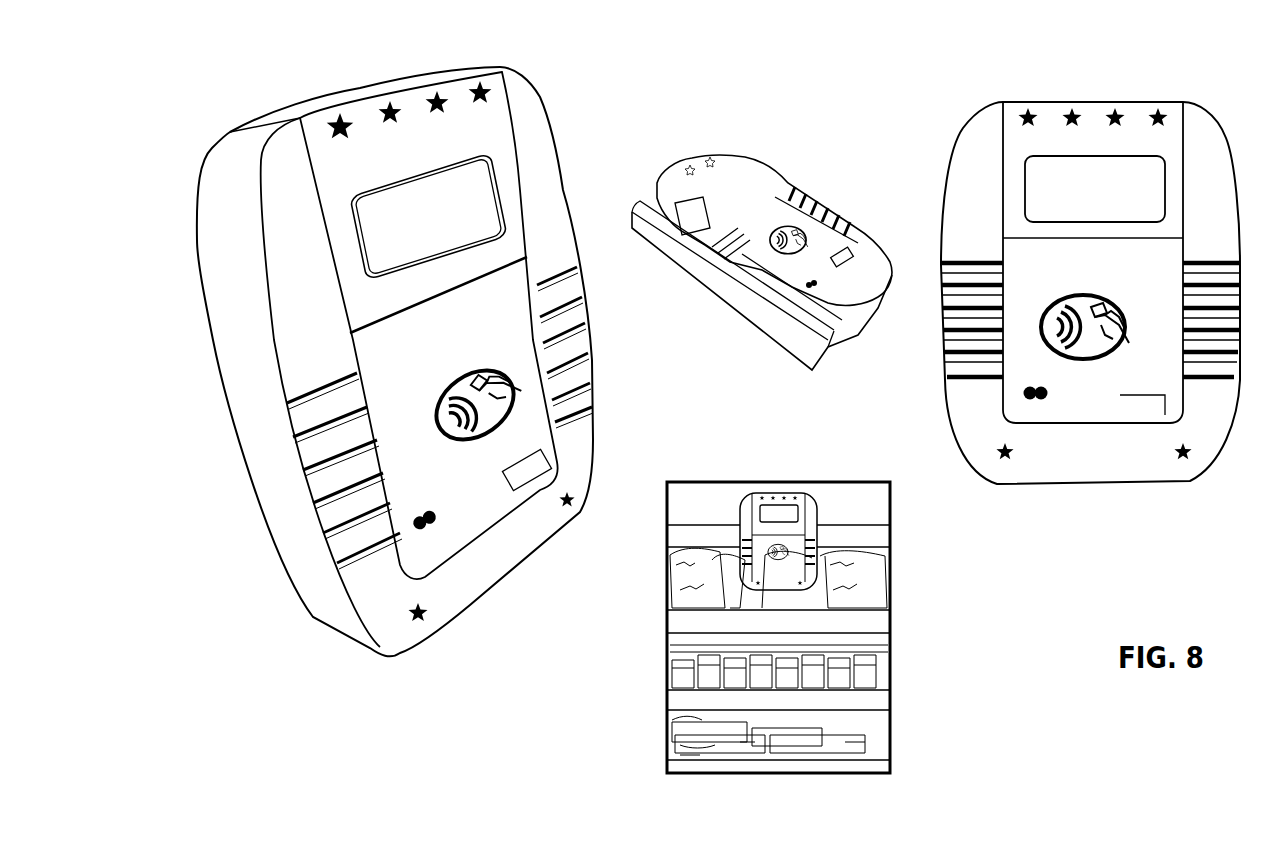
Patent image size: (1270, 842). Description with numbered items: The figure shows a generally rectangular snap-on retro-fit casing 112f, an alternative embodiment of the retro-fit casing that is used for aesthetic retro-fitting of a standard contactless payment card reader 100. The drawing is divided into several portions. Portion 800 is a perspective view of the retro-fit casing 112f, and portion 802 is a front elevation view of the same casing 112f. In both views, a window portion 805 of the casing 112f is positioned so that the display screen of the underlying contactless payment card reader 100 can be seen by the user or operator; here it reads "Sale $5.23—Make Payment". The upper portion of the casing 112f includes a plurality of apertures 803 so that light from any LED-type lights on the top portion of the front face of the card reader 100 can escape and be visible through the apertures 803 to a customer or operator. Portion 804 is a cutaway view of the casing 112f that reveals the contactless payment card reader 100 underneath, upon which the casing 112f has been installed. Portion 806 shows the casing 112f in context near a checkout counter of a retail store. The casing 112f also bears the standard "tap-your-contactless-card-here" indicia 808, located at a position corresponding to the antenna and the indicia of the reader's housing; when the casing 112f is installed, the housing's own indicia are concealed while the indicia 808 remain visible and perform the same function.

The contactless payment card reader 100 is at (735, 317).
The retro-fit casing embodiment 112f is at (554, 137).
The perspective view portion 800 is at (541, 598).
The front elevation view portion 802 is at (1222, 99).
The apertures 803 is at (480, 88).
The cutaway portion view 804 is at (689, 146).
The window portion 805 is at (503, 180).
The context view portion 806 is at (897, 543).
The tap-your-contactless-card-here indicia 808 is at (500, 366).